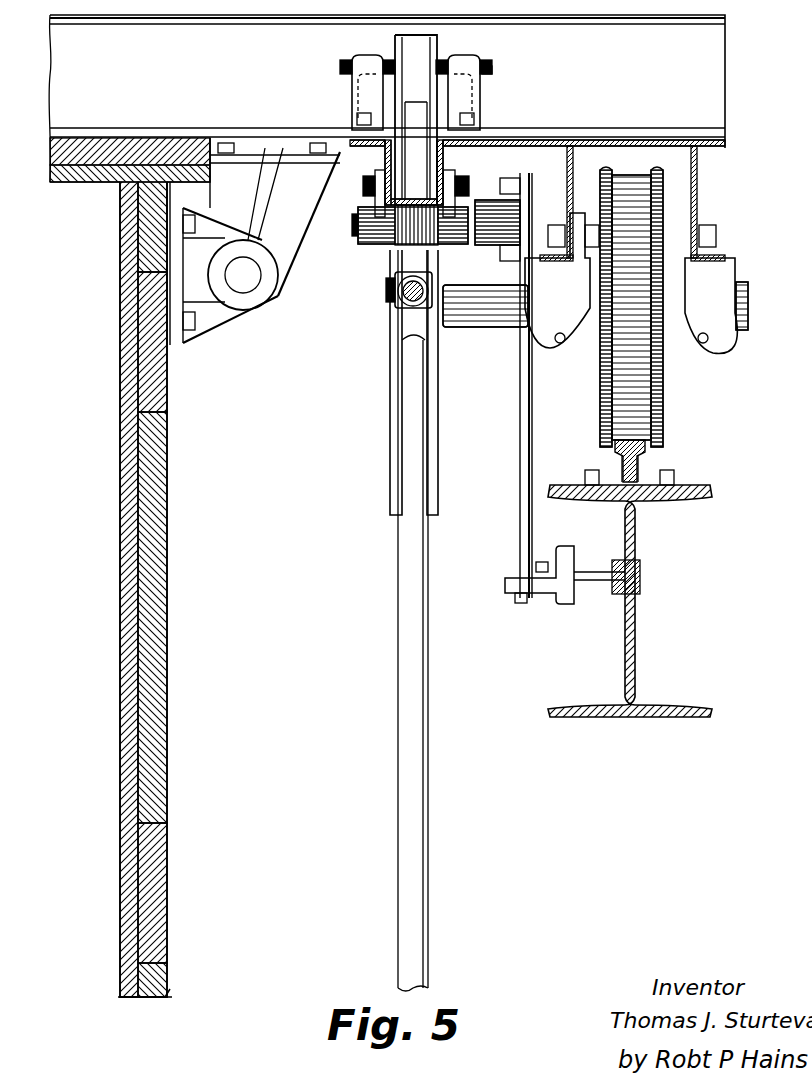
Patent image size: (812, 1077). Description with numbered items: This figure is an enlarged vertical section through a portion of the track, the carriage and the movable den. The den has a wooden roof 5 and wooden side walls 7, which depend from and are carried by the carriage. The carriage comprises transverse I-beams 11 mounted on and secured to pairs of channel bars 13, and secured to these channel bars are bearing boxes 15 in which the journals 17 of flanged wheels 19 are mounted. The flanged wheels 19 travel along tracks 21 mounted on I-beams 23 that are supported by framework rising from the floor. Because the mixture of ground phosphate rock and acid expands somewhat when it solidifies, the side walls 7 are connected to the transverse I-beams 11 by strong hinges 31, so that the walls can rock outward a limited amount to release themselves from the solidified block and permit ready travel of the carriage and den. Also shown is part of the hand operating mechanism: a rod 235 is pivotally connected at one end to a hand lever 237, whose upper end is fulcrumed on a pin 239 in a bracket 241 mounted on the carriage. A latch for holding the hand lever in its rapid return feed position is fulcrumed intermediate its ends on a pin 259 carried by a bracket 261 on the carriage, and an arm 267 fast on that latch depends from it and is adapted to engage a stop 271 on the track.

The roof 5 is at (70, 183).
The side walls 7 is at (167, 625).
The transverse I-beams 11 is at (715, 80).
The channel bars 13 is at (565, 165).
The bearing boxes 15 is at (530, 280).
The journals 17 is at (740, 330).
The flanged wheels 19 is at (665, 392).
The tracks 21 is at (638, 465).
The I-beams 23 is at (640, 630).
The hinges 31 is at (262, 290).
The rod 235 is at (405, 300).
The hand lever 237 is at (421, 686).
The pin 239 is at (493, 70).
The bracket 241 is at (346, 95).
The pin 259 is at (352, 225).
The bracket 261 is at (375, 196).
The arm 267 is at (520, 410).
The stop 271 is at (512, 578).